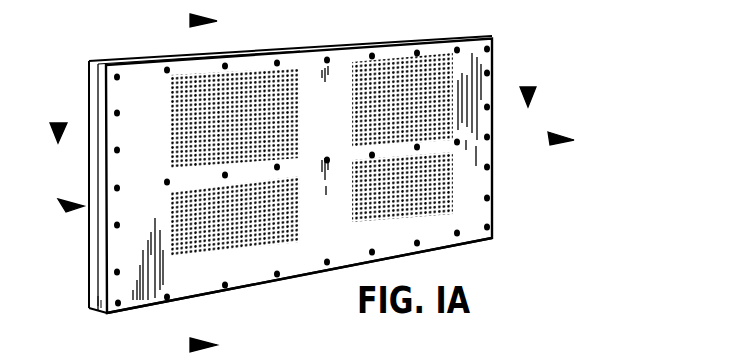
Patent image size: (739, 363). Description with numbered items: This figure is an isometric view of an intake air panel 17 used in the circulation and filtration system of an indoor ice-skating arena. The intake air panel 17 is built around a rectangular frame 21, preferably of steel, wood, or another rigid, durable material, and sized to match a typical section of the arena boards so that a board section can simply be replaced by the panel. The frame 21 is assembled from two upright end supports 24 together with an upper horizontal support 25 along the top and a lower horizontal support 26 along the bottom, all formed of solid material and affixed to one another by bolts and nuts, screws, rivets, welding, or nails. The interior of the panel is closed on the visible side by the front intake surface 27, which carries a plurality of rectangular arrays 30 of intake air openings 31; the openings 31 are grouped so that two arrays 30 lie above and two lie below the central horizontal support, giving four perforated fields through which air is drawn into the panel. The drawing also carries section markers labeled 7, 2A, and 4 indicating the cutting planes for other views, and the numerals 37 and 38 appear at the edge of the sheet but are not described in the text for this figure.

The intake air panel 17 is at (518, 206).
The frame 21 is at (84, 268).
The upright end supports 24 is at (100, 298).
The upper horizontal support 25 is at (240, 55).
The lower horizontal support 26 is at (293, 278).
The front intake surface 27 is at (345, 248).
The rectangular arrays 30 is at (438, 80).
The intake air openings 31 is at (393, 59).
The section line 7- 7 is at (190, 21).
The section line 2A- 2A is at (97, 90).
The section line 4- 4 is at (97, 193).
The element 37 is at (589, 351).
The element 38 is at (657, 354).